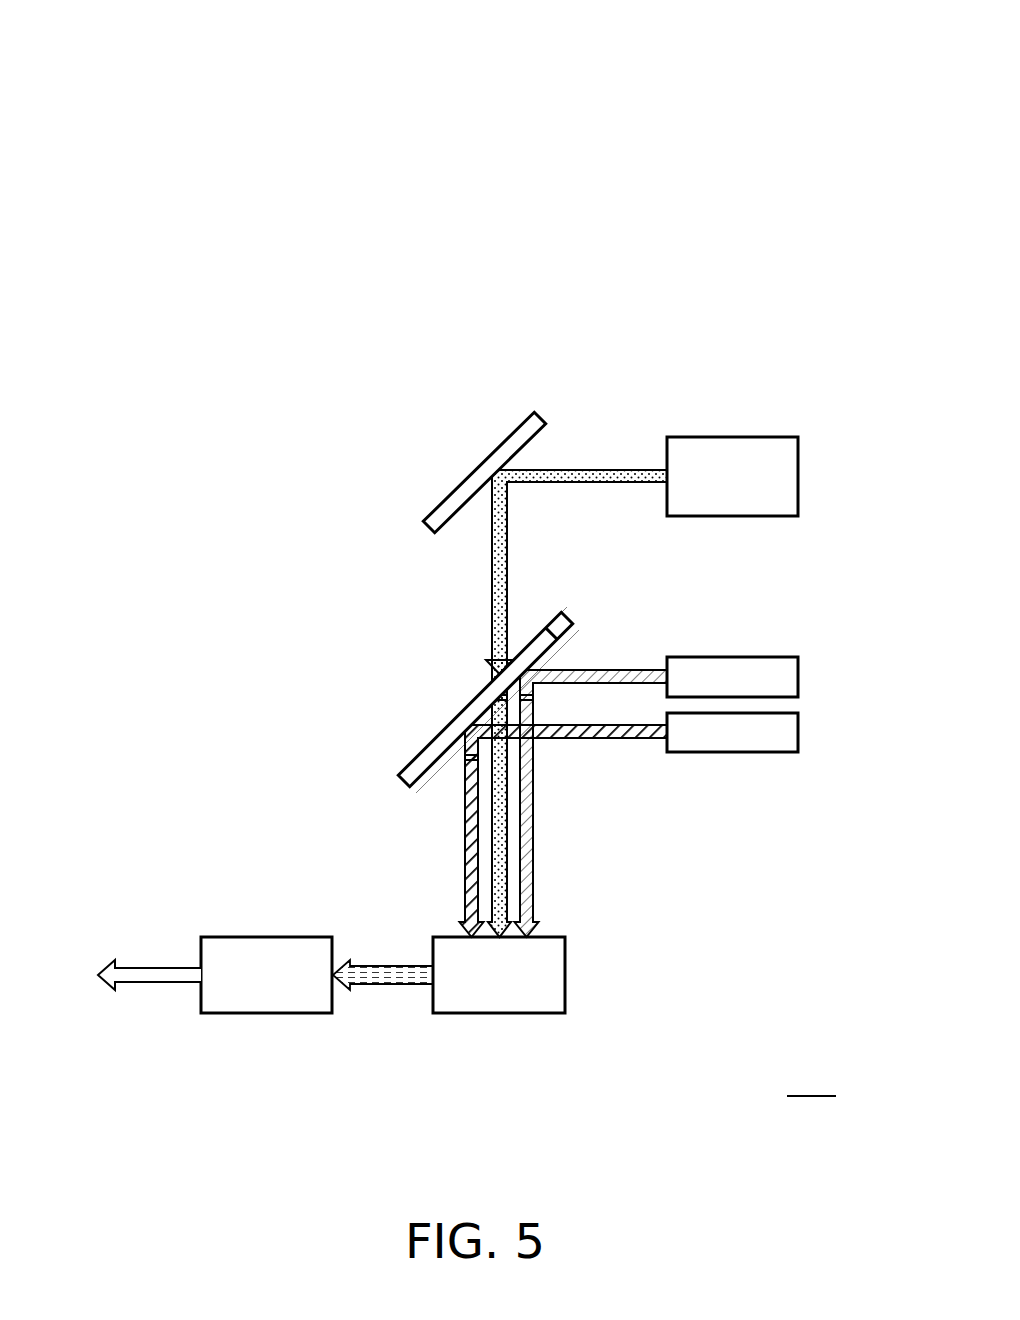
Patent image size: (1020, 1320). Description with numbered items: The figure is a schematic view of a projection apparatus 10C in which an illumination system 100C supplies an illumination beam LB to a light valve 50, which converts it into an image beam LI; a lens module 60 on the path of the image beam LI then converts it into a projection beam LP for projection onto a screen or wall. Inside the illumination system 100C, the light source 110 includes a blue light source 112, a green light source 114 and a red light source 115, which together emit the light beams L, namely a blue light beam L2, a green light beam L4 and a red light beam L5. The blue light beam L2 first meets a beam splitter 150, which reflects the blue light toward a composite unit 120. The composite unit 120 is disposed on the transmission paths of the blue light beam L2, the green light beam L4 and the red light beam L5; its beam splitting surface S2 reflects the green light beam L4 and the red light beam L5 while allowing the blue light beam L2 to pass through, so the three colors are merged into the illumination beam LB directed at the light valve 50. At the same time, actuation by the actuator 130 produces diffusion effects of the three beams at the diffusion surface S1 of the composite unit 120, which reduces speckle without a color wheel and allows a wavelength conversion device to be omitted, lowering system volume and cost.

The illumination system 100C is at (360, 280).
The light source 110 is at (115, 0).
The blue light source 112 is at (823, 480).
The green light source 114 is at (823, 735).
The red light source 115 is at (823, 680).
The light beams L is at (276, 0).
The blue light beam L2 is at (627, 471).
The green light beam L4 is at (620, 741).
The red light beam L5 is at (628, 670).
The illumination beam LB is at (428, 891).
The beam splitter 150 is at (450, 504).
The composite unit 120 is at (418, 768).
The actuator 130 is at (562, 622).
The diffusion surface S1 is at (445, 757).
The beam splitting surface S2 is at (438, 732).
The light valve 50 is at (497, 995).
The image beam LI is at (385, 977).
The lens module 60 is at (266, 993).
The projection beam LP is at (160, 977).
The projection apparatus 10C is at (811, 1075).